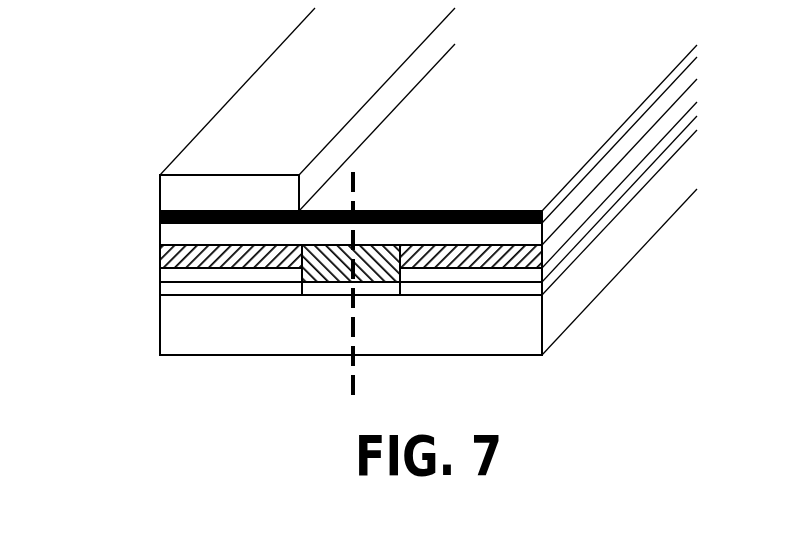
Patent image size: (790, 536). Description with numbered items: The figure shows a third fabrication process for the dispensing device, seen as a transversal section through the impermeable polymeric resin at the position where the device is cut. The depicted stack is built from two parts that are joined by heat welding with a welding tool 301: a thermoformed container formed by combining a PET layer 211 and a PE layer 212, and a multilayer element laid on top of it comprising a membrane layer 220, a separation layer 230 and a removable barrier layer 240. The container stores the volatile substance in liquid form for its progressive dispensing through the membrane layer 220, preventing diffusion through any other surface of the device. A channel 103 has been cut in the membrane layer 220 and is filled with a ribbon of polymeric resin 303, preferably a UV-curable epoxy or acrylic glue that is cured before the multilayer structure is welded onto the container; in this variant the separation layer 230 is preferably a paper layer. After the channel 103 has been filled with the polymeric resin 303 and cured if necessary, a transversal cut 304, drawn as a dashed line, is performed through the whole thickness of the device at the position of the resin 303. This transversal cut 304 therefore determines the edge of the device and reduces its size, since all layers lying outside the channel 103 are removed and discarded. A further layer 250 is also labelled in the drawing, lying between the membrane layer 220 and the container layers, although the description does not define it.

The welding tool 301 is at (245, 100).
The channel 103 is at (320, 250).
The polymeric resin 303 is at (380, 250).
The removable barrier layer 240 is at (162, 217).
The separation layer 230 is at (177, 238).
The membrane layer 220 is at (162, 257).
The intermediate layer 250 is at (167, 288).
The PE layer 212 is at (525, 288).
The PET layer 211 is at (470, 335).
The transversal cut 304 is at (348, 388).